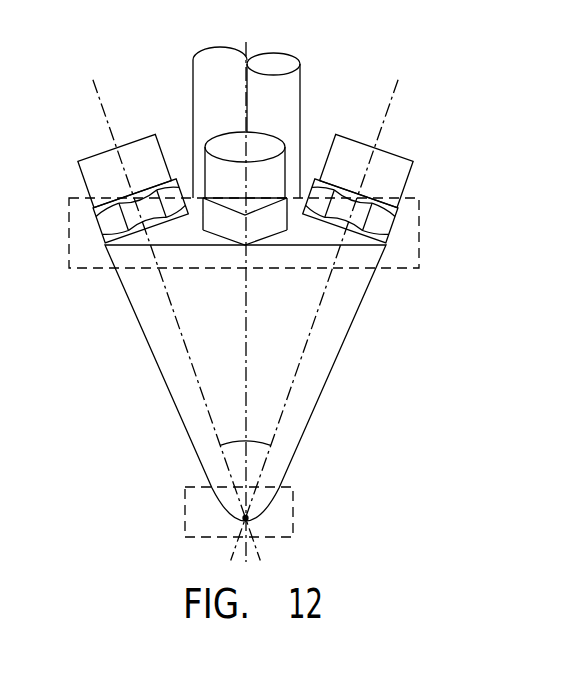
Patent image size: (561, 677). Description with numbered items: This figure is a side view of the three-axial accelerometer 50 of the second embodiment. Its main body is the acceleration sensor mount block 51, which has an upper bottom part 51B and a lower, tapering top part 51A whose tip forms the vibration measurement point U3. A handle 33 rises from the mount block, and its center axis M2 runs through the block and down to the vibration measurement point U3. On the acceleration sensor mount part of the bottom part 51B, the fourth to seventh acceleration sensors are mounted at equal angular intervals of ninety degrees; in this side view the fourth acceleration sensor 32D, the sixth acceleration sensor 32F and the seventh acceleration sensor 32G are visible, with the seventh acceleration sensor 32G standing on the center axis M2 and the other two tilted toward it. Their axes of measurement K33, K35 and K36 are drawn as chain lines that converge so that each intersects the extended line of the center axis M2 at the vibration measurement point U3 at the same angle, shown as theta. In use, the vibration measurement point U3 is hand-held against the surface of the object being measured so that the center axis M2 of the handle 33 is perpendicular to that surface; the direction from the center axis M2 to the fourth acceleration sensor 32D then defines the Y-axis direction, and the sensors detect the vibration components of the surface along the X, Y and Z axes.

The three-axial accelerometer 50 is at (470, 333).
The acceleration sensor mount block 51 is at (301, 400).
The top part 51A is at (294, 507).
The bottom part 51B is at (420, 227).
The vibration measurement point U3 is at (248, 521).
The axis of measurement K33 is at (392, 97).
The axis of measurement K35 is at (101, 100).
The axis of measurement K36 is at (249, 84).
The fourth acceleration sensor 32D is at (393, 158).
The sixth acceleration sensor 32F is at (97, 167).
The seventh acceleration sensor 32G is at (275, 172).
The handle 33 is at (215, 55).
The center axis of the handle M2 is at (249, 47).